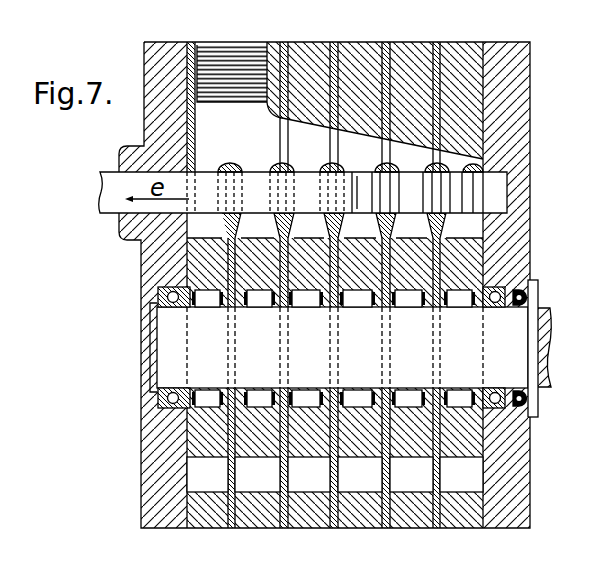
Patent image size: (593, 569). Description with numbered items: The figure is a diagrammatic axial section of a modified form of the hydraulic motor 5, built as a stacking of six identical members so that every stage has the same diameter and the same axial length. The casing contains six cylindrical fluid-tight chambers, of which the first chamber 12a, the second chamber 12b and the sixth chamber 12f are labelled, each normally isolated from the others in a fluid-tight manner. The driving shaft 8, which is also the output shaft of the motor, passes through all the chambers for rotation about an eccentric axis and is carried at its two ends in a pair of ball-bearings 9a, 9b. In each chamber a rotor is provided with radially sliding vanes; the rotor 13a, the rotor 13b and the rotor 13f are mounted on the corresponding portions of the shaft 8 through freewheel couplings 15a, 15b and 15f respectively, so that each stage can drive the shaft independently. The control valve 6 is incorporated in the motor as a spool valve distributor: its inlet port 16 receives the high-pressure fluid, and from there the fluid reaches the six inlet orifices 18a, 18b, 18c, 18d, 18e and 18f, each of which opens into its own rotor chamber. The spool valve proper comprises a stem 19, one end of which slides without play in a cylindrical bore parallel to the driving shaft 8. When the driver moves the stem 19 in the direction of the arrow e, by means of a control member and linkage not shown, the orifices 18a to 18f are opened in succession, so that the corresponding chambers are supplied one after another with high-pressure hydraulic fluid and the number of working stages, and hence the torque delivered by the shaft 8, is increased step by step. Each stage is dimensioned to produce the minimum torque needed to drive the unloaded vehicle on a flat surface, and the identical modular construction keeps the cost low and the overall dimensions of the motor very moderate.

The hydraulic motor 5 is at (139, 60).
The control valve 6 is at (199, 130).
The driving shaft 8 is at (162, 325).
The ball-bearing 9a is at (497, 287).
The ball-bearing 9b is at (165, 283).
The fluid-tight chamber 12a is at (461, 474).
The fluid-tight chamber 12b is at (411, 474).
The fluid-tight chamber 12f is at (207, 474).
The rotor 13a is at (455, 413).
The rotor 13b is at (407, 413).
The rotor 13f is at (207, 413).
The freewheel coupling 15a is at (463, 307).
The freewheel coupling 15b is at (413, 307).
The freewheel coupling 15f is at (208, 307).
The inlet port 16 is at (230, 50).
The orifice 18a is at (465, 162).
The orifice 18b is at (411, 168).
The orifice 18c is at (362, 163).
The orifice 18d is at (313, 163).
The orifice 18e is at (259, 163).
The orifice 18f is at (209, 165).
The spool-valve stem 19 is at (101, 180).